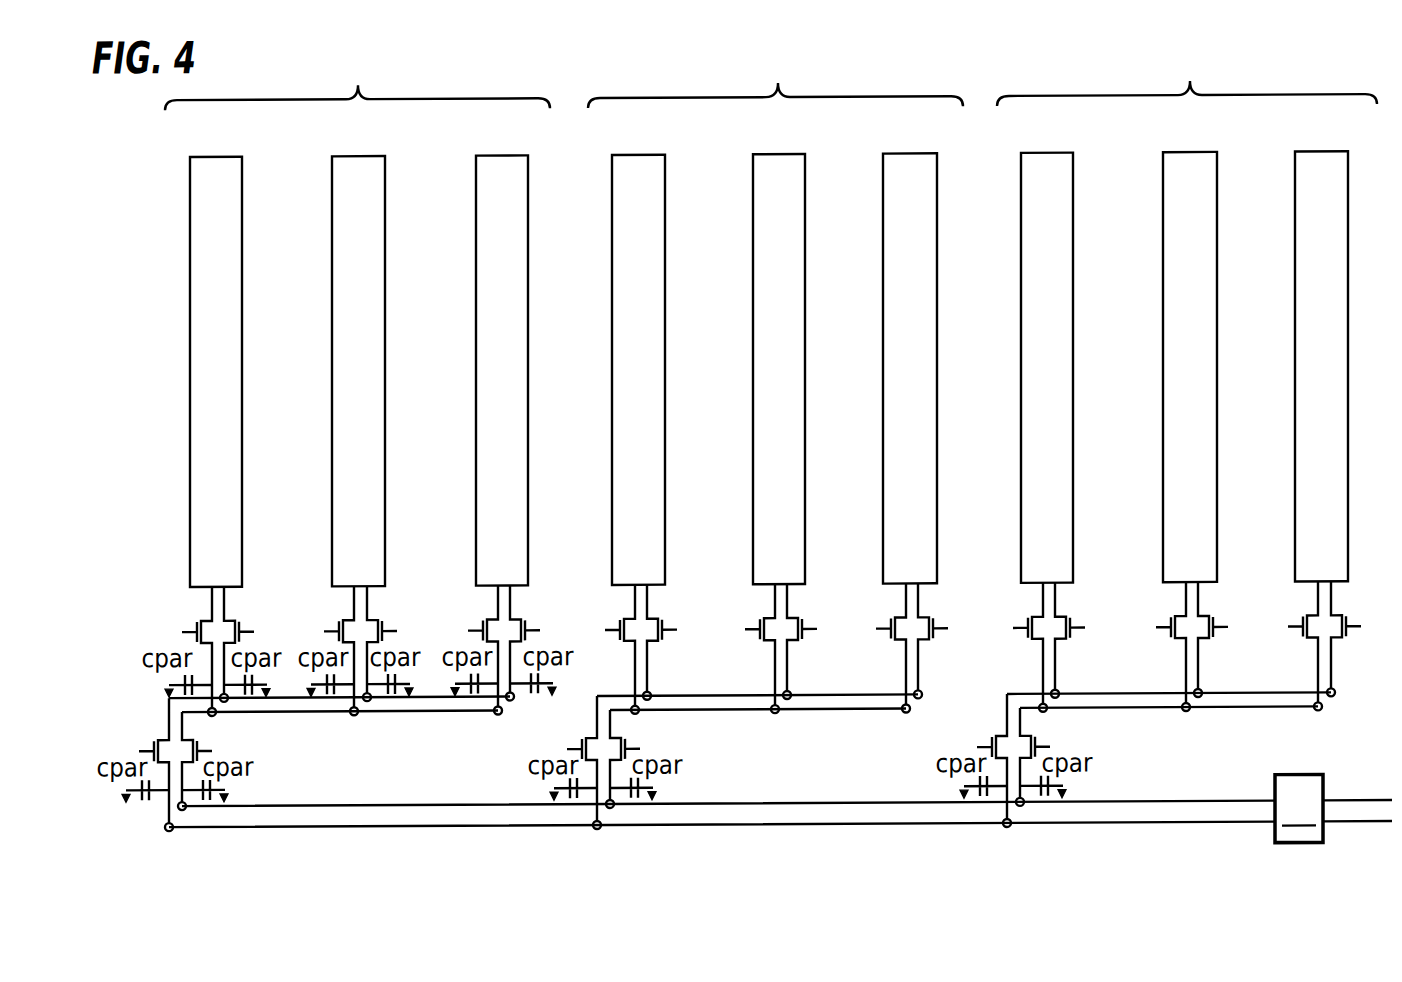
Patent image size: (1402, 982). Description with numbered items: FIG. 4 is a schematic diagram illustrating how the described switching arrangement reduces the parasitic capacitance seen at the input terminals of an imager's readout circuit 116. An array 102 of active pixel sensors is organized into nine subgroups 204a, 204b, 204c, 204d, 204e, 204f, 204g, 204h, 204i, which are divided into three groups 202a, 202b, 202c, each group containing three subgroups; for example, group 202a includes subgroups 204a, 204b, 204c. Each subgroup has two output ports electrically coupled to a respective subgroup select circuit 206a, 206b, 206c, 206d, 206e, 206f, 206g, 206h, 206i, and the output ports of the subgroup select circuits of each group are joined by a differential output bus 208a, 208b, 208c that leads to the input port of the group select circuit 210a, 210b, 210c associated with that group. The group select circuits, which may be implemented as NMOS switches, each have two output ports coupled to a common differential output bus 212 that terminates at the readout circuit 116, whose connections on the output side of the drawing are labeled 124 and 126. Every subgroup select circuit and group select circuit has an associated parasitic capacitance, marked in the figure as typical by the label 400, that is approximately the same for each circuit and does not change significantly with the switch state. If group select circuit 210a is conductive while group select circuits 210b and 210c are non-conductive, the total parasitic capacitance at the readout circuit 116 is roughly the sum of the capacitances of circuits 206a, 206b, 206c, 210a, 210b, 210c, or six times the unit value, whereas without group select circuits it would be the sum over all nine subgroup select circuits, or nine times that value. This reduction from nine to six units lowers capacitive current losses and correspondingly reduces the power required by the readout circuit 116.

The array 102 is at (978, 97).
The readout circuit 116 is at (395, 834).
The output line 124 is at (1347, 806).
The output line 126 is at (1347, 829).
The group 202a is at (357, 83).
The group 202b is at (775, 81).
The group 202c is at (1187, 79).
The subgroup 204a is at (216, 353).
The subgroup 204b is at (358, 352).
The subgroup 204c is at (502, 351).
The subgroup 204d is at (638, 351).
The subgroup 204e is at (779, 350).
The subgroup 204f is at (910, 349).
The subgroup 204g is at (1047, 349).
The subgroup 204h is at (1190, 348).
The subgroup 204i is at (1321, 347).
The subgroup select circuit 206a is at (198, 652).
The subgroup select circuit 206b is at (340, 651).
The subgroup select circuit 206c is at (484, 650).
The subgroup select circuit 206d is at (613, 650).
The subgroup select circuit 206e is at (753, 649).
The subgroup select circuit 206f is at (885, 648).
The subgroup select circuit 206g is at (1021, 648).
The subgroup select circuit 206h is at (1164, 647).
The subgroup select circuit 206i is at (1303, 646).
The differential output bus 208a is at (293, 690).
The differential output bus 208b is at (740, 690).
The differential output bus 208c is at (1138, 690).
The group select circuit 210a is at (310, 764).
The group select circuit 210b is at (728, 761).
The group select circuit 210c is at (1139, 759).
The common differential output bus 212 is at (745, 788).
The parasitic capacitance (typical) 400 is at (141, 662).